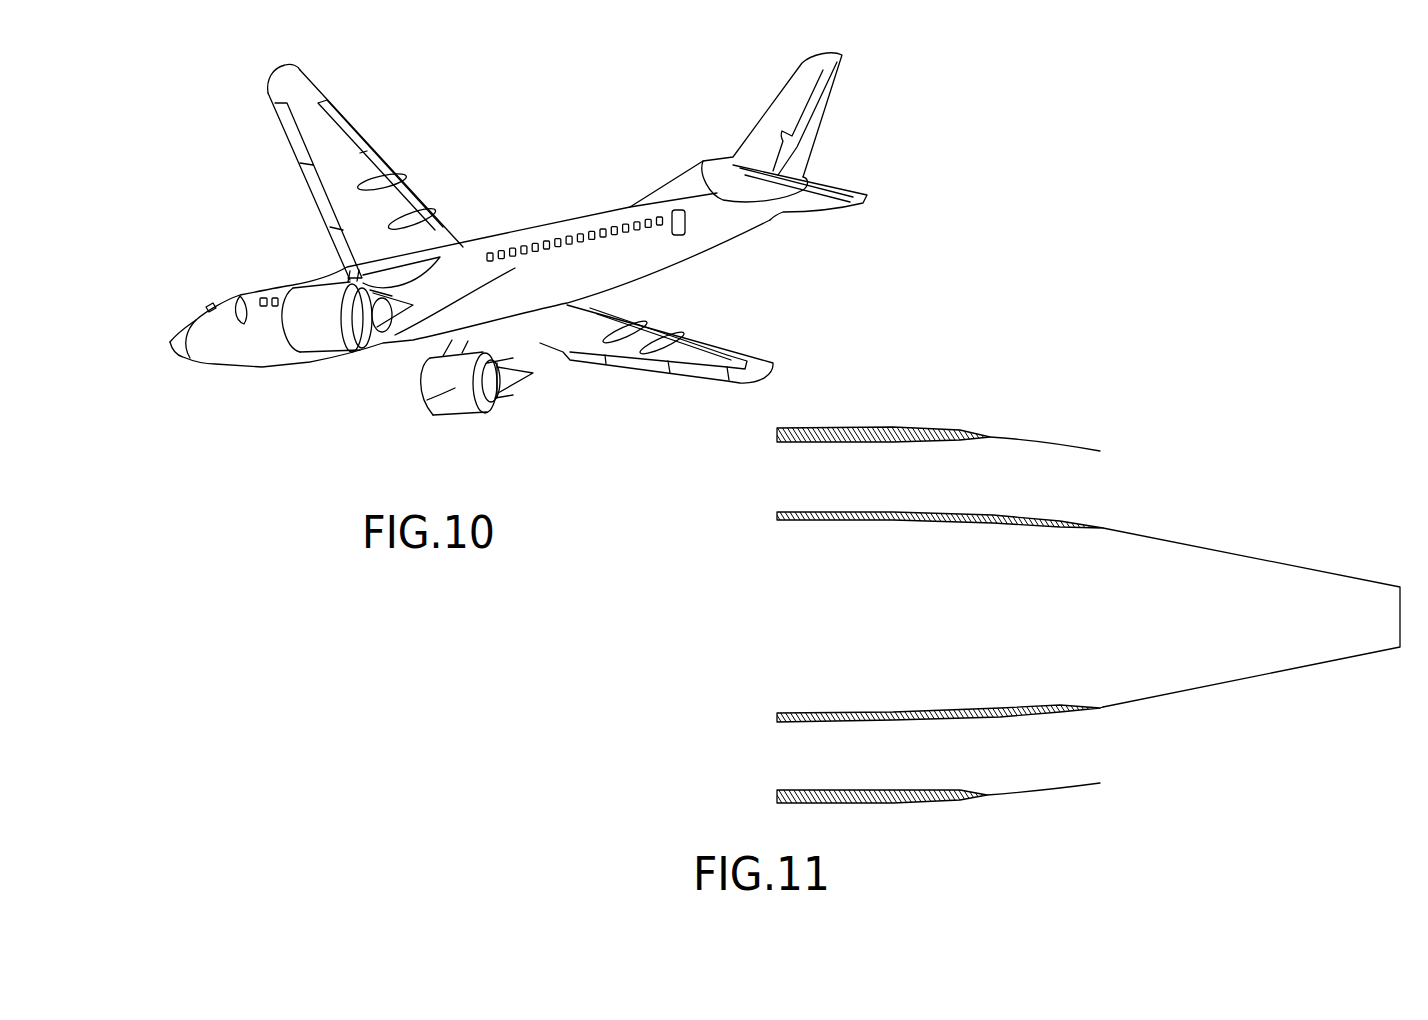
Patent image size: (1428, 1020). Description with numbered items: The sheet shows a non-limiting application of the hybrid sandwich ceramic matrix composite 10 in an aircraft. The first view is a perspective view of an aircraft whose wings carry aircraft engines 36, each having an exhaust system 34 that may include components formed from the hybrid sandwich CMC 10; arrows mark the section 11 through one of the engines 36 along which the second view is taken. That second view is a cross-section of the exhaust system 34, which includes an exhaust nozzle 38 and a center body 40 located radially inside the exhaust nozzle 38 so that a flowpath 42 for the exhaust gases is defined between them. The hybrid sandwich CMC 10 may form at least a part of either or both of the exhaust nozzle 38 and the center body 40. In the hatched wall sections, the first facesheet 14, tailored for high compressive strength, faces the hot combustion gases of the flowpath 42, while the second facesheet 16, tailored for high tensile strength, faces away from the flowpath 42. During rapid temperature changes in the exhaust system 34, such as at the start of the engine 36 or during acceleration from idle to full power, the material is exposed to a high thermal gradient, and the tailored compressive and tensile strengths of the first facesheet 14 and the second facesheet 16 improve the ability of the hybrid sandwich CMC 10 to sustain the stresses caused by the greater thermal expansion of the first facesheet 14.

In FIG. 11, the hybrid sandwich ceramic matrix composite 10 is at (804, 429).
In FIG. 10, the section 11- 11 is at (507, 360).
In FIG. 11, the first facesheet 14 is at (884, 443).
In FIG. 11, the second facesheet 16 is at (858, 429).
In FIG. 10, the exhaust system 34 is at (518, 237).
In FIG. 11, the exhaust system 34 is at (1088, 594).
In FIG. 10, the aircraft engine 36 is at (313, 303).
In FIG. 11, the exhaust nozzle 38 is at (947, 432).
In FIG. 11, the center body 40 is at (1287, 558).
In FIG. 11, the flowpath 42 is at (1011, 486).